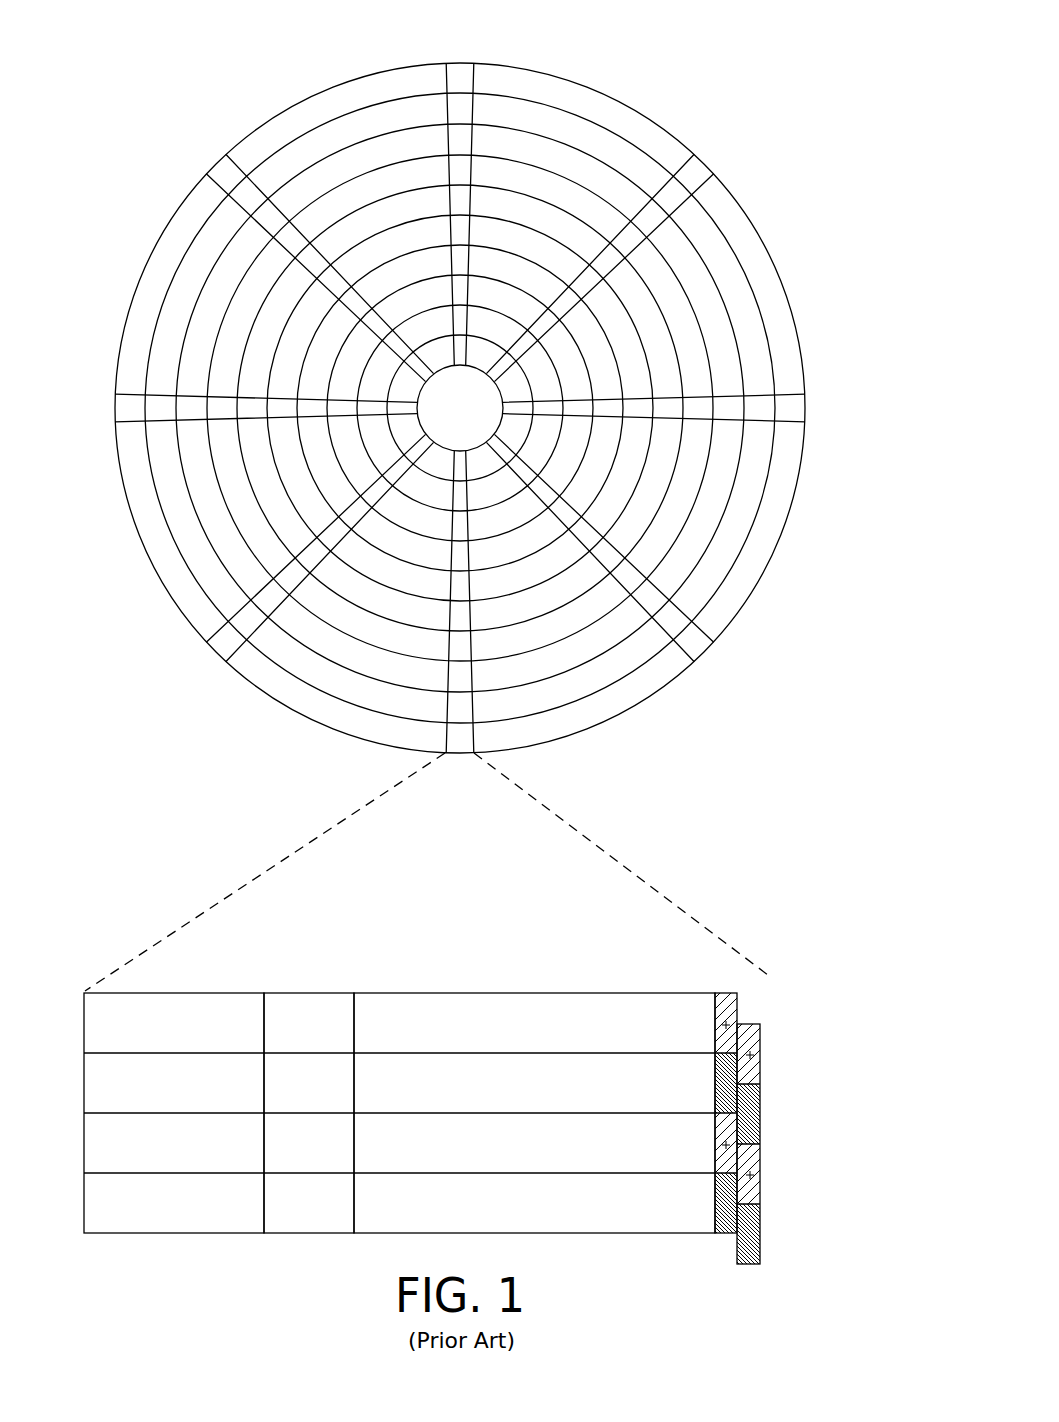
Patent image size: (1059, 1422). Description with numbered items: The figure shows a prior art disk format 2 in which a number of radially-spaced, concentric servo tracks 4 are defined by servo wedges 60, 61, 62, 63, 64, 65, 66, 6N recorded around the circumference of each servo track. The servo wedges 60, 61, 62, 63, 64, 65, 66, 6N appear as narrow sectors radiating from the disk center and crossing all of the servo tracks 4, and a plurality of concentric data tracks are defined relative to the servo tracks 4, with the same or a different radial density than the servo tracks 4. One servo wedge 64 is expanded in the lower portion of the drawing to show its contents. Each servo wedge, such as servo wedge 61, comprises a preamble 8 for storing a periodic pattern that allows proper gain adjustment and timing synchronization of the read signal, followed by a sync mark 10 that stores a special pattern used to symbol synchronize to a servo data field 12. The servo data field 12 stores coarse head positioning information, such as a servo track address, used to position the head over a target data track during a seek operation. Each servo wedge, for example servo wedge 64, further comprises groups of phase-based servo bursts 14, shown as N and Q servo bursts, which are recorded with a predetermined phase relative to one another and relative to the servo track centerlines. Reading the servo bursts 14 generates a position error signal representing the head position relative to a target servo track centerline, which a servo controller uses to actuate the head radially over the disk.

The disk format 2 is at (206, 70).
The servo tracks 4 is at (577, 133).
The servo wedge 60 is at (460, 75).
The servo wedge 61 is at (694, 173).
The servo wedge 62 is at (797, 408).
The servo wedge 63 is at (701, 660).
The servo wedge 64 is at (307, 838).
The servo wedge 65 is at (220, 659).
The servo wedge 66 is at (121, 408).
The servo wedge 6N is at (145, 160).
The preamble 8 is at (182, 993).
The sync mark 10 is at (311, 993).
The servo data field 12 is at (521, 993).
The servo bursts 14 is at (752, 992).